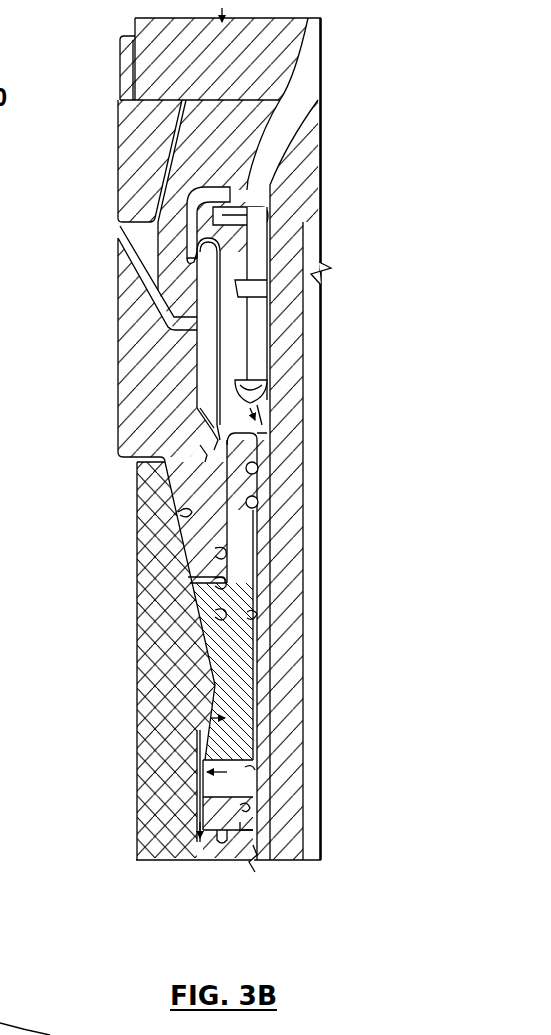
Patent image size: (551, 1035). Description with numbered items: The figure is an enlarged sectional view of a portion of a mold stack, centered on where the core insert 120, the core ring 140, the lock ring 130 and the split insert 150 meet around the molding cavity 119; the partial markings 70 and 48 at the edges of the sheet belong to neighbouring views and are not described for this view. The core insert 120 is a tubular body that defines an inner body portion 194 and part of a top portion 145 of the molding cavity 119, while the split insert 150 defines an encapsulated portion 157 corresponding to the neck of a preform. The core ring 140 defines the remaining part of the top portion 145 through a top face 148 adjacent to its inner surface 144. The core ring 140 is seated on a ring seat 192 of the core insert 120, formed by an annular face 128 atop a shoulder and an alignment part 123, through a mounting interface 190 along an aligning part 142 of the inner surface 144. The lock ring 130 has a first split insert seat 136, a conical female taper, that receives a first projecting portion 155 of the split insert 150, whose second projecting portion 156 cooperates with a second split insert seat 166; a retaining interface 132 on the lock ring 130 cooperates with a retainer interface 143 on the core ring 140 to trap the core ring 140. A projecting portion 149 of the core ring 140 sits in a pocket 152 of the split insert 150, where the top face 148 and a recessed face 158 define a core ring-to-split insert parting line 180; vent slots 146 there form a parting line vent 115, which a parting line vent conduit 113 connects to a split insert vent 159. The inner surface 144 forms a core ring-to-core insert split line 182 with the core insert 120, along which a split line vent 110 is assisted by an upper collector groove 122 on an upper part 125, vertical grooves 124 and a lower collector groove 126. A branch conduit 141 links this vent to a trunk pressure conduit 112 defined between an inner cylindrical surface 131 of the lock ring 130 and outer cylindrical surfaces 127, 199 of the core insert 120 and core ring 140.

The split line vent 110 is at (380, 428).
The trunk pressure conduit 112 is at (283, 905).
The parting line vent conduit 113 is at (80, 593).
The parting line vent 115 is at (62, 528).
The molding cavity 119 is at (305, 68).
The core insert 120 is at (327, 140).
The upper collector groove 122 is at (262, 508).
The alignment part 123 is at (248, 825).
The vertical grooves 124 is at (250, 566).
The upper part 125 is at (258, 467).
The lower collector groove 126 is at (238, 752).
The outer cylindrical surface 127 is at (212, 843).
The annular face 128 is at (252, 830).
The lock ring 130 is at (99, 678).
The inner cylindrical surface 131 is at (222, 843).
The retaining interface 132 is at (210, 690).
The first split insert seat 136 is at (178, 512).
The core ring 140 is at (207, 773).
The branch conduit 141 is at (200, 808).
The aligning part 142 is at (252, 617).
The retainer interface 143 is at (213, 668).
The inner surface 144 is at (268, 452).
The top portion 145 is at (260, 430).
The vent slots 146 is at (0, 1030).
The top face 148 is at (213, 412).
The projecting portion 149 is at (218, 614).
The split insert 150 is at (88, 247).
The pocket 152 is at (218, 582).
The first projecting portion 155 is at (188, 123).
The second projecting portion 156 is at (218, 552).
The encapsulated portion 157 is at (271, 327).
The recessed face 158 is at (195, 462).
The split insert vent 159 is at (197, 357).
The second split insert seat 166 is at (176, 176).
The core ring-to-split insert parting line 180 is at (257, 403).
The core ring-to-core insert split line 182 is at (247, 440).
The mounting interface 190 is at (373, 743).
The ring seat 192 is at (377, 810).
The inner body portion 194 is at (268, 218).
The outer cylindrical surface 199 is at (197, 813).
The component 70 is at (13, 27).
The component 48 is at (50, 960).